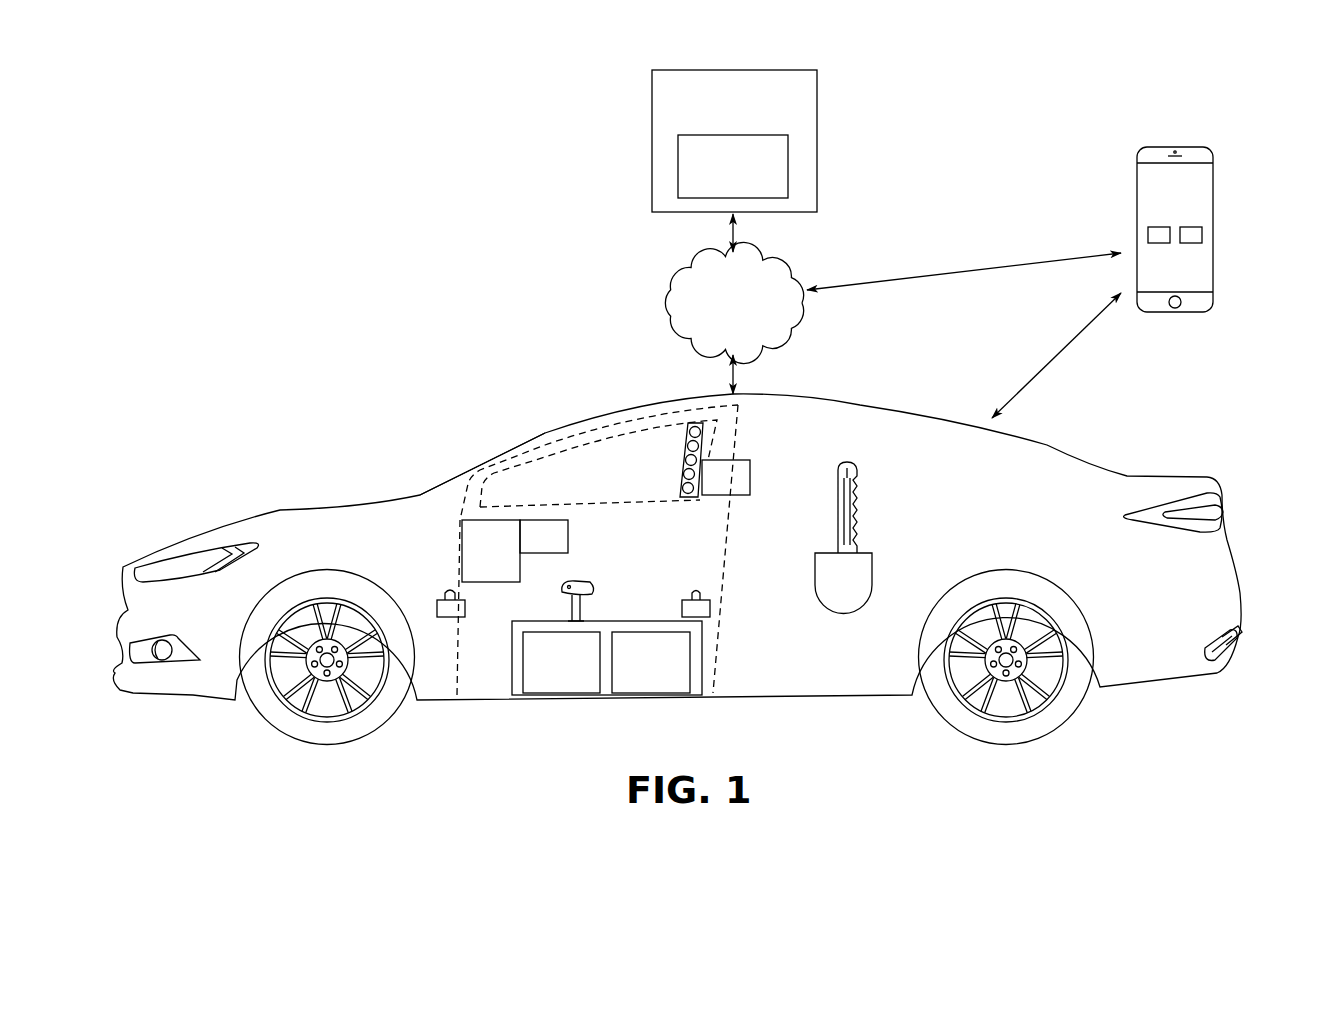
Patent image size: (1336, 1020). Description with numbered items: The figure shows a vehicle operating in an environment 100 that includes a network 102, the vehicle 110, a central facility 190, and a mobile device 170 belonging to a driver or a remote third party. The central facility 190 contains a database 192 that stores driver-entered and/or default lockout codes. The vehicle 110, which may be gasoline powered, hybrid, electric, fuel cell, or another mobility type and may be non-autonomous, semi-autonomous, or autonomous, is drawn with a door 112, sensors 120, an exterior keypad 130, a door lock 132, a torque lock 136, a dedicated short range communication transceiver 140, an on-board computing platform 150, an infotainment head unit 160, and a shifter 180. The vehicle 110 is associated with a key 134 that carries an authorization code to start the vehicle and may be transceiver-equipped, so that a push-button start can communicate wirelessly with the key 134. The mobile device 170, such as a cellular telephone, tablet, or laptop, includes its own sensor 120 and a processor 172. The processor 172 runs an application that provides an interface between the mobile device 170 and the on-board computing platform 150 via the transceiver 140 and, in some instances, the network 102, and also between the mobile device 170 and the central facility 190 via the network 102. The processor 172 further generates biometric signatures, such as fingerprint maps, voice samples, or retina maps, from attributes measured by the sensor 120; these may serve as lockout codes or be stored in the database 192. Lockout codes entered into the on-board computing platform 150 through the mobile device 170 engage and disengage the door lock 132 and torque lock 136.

The environment 100 is at (364, 250).
The network 102 is at (734, 302).
The vehicle 110 is at (411, 378).
The door 112 is at (547, 453).
The sensors 120 is at (1148, 235).
The exterior keypad 130 is at (703, 440).
The door lock 132 is at (710, 608).
The key 134 is at (873, 568).
The torque lock 136 is at (445, 598).
The dedicated short range communication (DSRC) transceiver 140 is at (651, 662).
The on-board computing platform (OBCP) 150 is at (607, 658).
The infotainment head unit (IHU) 160 is at (491, 551).
The mobile device 170 is at (1213, 175).
The processor 172 is at (1203, 235).
The shifter 180 is at (590, 587).
The central facility 190 is at (734, 141).
The database 192 is at (733, 166).